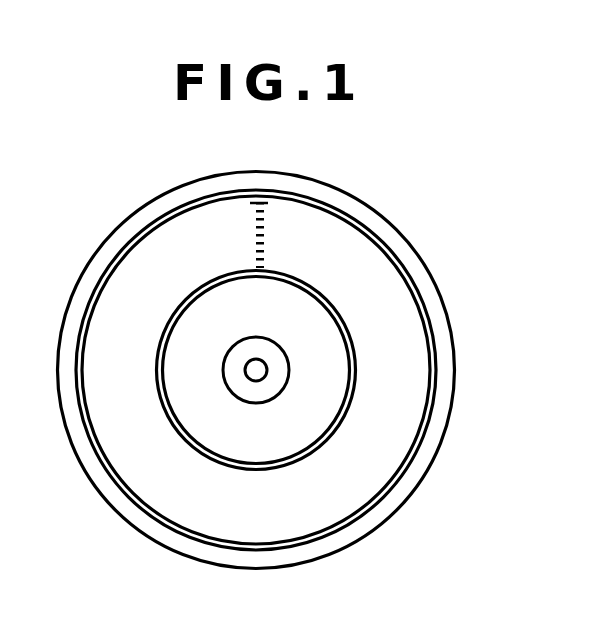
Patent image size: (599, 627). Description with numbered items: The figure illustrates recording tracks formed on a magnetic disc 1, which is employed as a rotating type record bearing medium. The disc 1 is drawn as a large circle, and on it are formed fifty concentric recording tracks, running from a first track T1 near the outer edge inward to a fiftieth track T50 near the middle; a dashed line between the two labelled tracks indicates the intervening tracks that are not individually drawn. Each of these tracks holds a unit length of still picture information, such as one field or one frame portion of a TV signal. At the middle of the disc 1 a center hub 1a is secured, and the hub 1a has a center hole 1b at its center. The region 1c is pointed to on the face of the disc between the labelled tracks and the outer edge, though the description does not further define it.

The magnetic disc 1 is at (437, 422).
The center hub 1a is at (268, 390).
The center hole 1b is at (261, 370).
The recording area 1c is at (412, 342).
The first recording track T1 is at (328, 208).
The fiftieth recording track T50 is at (232, 272).